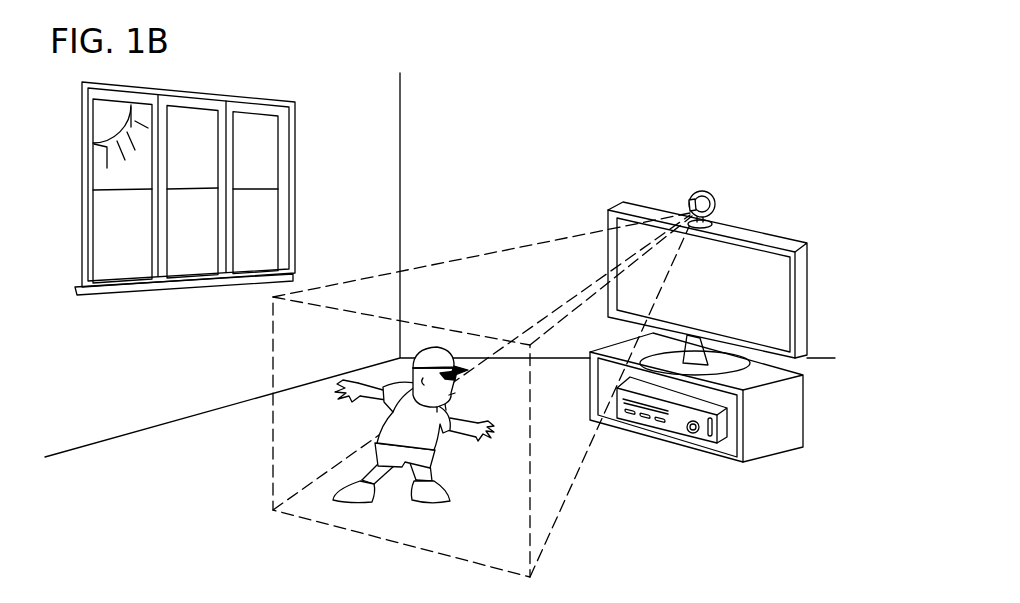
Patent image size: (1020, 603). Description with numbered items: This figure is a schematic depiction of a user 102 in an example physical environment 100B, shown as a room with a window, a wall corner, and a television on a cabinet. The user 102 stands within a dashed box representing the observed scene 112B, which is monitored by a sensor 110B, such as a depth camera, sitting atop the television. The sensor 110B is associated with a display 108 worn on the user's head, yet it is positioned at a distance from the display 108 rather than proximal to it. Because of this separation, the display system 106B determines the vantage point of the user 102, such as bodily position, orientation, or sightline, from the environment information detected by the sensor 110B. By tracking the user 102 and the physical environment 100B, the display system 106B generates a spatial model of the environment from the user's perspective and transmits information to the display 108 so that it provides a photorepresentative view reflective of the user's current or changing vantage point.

The physical environment 100B is at (505, 102).
The user 102 is at (418, 435).
The display system 106B is at (710, 163).
The display 108 is at (420, 356).
The sensor 110B is at (727, 195).
The observed scene 112B is at (330, 335).